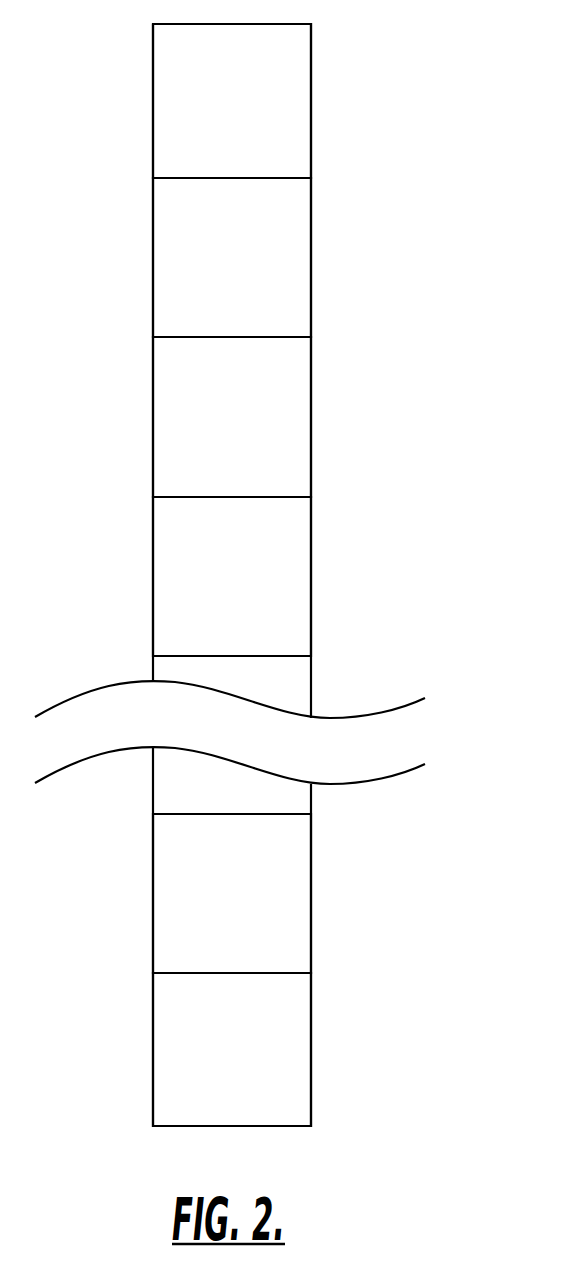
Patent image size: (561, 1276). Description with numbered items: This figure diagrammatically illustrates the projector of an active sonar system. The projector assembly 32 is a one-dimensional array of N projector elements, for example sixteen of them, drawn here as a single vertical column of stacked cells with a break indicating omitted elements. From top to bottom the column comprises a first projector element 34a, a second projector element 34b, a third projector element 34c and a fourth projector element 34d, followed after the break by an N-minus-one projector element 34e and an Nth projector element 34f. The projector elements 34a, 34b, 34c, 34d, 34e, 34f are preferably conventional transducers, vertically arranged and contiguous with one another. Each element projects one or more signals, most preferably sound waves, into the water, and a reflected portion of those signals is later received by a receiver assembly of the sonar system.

The projector assembly 32 is at (322, 202).
The first projector element 34a is at (273, 129).
The second projector element 34b is at (273, 293).
The third projector element 34c is at (272, 458).
The fourth projector element 34d is at (273, 615).
The N-1 projector element 34e is at (272, 932).
The Nth projector element 34f is at (268, 1090).